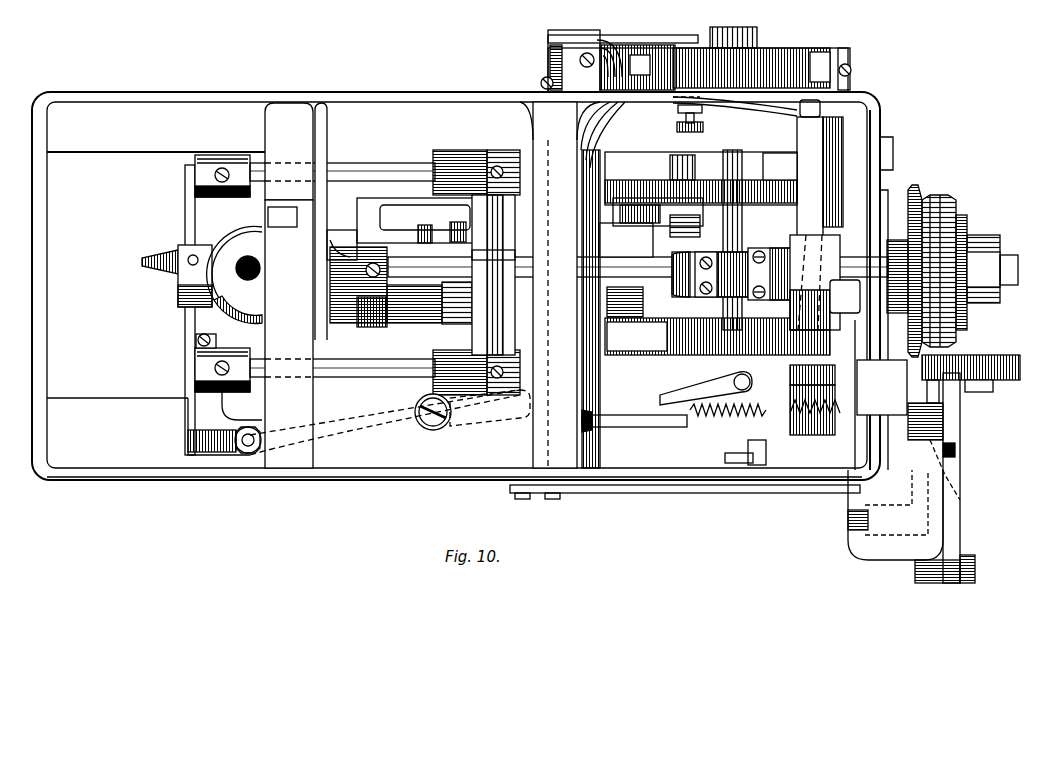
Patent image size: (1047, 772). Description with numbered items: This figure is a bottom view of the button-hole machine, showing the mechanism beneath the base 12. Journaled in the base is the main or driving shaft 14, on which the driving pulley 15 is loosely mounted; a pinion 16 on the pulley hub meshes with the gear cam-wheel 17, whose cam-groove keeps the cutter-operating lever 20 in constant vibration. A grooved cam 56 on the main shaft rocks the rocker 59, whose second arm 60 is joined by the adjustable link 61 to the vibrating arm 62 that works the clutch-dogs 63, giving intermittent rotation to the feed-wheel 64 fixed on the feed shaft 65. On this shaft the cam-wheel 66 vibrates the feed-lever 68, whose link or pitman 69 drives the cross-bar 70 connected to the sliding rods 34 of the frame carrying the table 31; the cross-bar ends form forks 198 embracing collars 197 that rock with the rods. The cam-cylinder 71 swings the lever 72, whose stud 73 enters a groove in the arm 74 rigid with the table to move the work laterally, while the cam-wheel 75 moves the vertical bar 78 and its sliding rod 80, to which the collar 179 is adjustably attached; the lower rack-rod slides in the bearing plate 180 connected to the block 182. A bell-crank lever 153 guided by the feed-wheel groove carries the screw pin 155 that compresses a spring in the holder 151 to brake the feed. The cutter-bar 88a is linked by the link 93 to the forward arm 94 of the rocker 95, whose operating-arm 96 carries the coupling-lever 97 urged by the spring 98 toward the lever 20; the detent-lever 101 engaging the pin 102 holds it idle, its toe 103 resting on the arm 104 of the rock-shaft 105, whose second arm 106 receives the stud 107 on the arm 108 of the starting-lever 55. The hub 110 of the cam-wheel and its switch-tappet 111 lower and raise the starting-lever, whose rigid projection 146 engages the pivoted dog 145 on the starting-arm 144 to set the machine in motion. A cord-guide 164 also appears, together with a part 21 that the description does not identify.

The base 12 is at (380, 92).
The main or driving shaft 14 is at (1009, 255).
The driving pulley 15 is at (935, 197).
The pinion 16 is at (888, 254).
The gear cam-wheel 17 is at (882, 387).
The cutter-operating lever 20 is at (856, 358).
The shaft collars 21 is at (730, 246).
The plate or table 31 is at (170, 226).
The sliding rods 34 is at (345, 162).
The starting-lever 55 is at (955, 495).
The grooved cam 56 is at (825, 303).
The rocker 59 is at (780, 166).
The second arm 60 is at (800, 122).
The link 61 is at (768, 106).
The vibrating arm 62 is at (708, 108).
The clutch-dogs 63 is at (852, 70).
The feed-wheel 64 is at (785, 42).
The feed shaft 65 is at (742, 228).
The cam-wheel 66 is at (672, 190).
The feed-lever 68 is at (640, 190).
The link or pitman 69 is at (642, 232).
The cross-bar 70 is at (478, 322).
The cam-cylinder 71 is at (790, 382).
The lever 72 is at (505, 425).
The pin or stud 73 is at (246, 427).
The arm 74 is at (188, 408).
The cam-wheel 75 is at (733, 322).
The vertical bar 78 is at (633, 315).
The sliding rod 80 is at (420, 306).
The cutter-bar 88a is at (447, 310).
The link 93 is at (342, 236).
The forward arm 94 is at (420, 193).
The rocker 95 is at (572, 285).
The operating-arm 96 is at (630, 428).
The coupling-lever 97 is at (823, 400).
The spring 98 is at (705, 420).
The detent-lever 101 is at (745, 462).
The pin 102 is at (725, 455).
The toe 103 is at (832, 480).
The arm 104 is at (856, 448).
The rock-shaft 105 is at (880, 528).
The second arm 106 is at (950, 472).
The pin or stud 107 is at (957, 449).
The arm 108 is at (950, 520).
The hub 110 is at (943, 421).
The switch-tappet 111 is at (925, 395).
The starting-arm 144 is at (995, 355).
The pivoted dog 145 is at (955, 382).
The rigid projection 146 is at (955, 398).
The holder 151 is at (620, 85).
The bell-crank lever 153 is at (548, 45).
The adjustable screw pin 155 is at (541, 76).
The cord-guide 164 is at (150, 256).
The collar 179 is at (375, 320).
The bearing plate or guide 180 is at (178, 288).
The support or block 182 is at (234, 264).
The collars 197 is at (493, 150).
The forks 198 is at (466, 150).